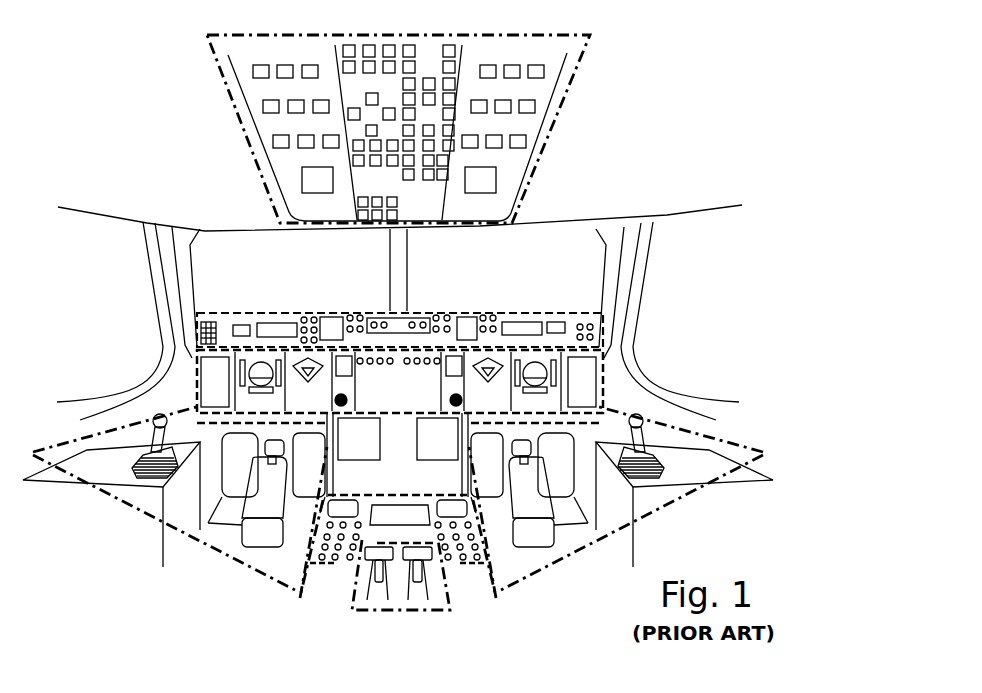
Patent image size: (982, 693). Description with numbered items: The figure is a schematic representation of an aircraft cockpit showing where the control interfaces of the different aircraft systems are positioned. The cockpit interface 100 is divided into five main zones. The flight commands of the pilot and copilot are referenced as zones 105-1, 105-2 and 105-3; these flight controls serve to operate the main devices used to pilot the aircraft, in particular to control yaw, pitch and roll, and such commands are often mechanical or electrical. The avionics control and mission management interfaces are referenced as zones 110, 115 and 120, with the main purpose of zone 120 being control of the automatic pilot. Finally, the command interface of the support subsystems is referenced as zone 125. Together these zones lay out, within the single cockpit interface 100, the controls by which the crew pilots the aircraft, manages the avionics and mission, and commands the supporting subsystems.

The cockpit interface 100 is at (736, 95).
The flight command zone 105-1 is at (120, 504).
The flight command zone 105-2 is at (668, 500).
The flight command zone 105-3 is at (382, 615).
The avionics control and mission management interface 110 is at (196, 362).
The avionics control and mission management interface 115 is at (467, 567).
The avionics control and mission management interface 120 is at (290, 311).
The command interface of the support subsystems 125 is at (229, 98).